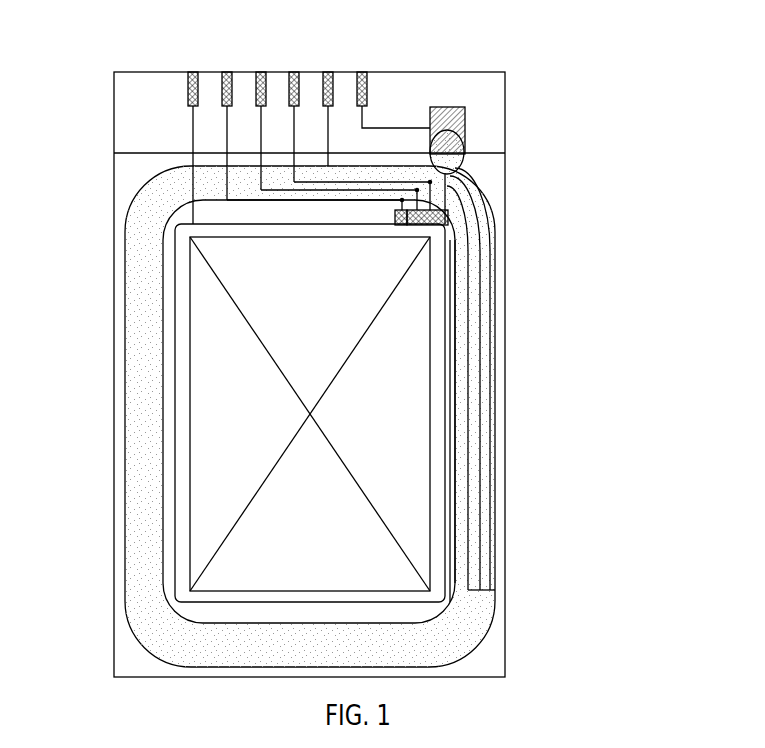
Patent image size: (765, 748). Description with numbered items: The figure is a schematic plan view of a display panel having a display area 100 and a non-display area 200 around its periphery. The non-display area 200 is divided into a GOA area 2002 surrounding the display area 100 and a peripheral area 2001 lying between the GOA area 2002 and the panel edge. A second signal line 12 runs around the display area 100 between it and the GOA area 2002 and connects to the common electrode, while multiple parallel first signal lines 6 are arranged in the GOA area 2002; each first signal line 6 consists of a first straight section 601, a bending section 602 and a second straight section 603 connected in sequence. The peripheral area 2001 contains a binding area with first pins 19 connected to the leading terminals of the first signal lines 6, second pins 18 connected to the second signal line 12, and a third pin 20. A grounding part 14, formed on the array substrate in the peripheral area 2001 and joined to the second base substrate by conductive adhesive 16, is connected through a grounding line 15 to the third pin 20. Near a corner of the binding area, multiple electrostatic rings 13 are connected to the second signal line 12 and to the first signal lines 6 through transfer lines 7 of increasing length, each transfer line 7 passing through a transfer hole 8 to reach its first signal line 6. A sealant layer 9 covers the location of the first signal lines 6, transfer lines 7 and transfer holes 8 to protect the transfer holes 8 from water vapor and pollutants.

The display area 100 is at (403, 458).
The non-display area 200 is at (398, 374).
The peripheral area 2001 is at (493, 645).
The GOA area 2002 is at (498, 543).
The sealant layer 9 is at (142, 488).
The second signal line 12 is at (175, 343).
The second pins 18 is at (193, 72).
The first pins 19 is at (228, 72).
The third pin 20 is at (362, 72).
The grounding line 15 is at (395, 128).
The grounding part 14 is at (445, 107).
The conductive adhesive 16 is at (462, 128).
The first signal lines 6 is at (527, 359).
The first straight section 601 is at (465, 162).
The bending section 602 is at (478, 180).
The second straight section 603 is at (514, 379).
The transfer lines 7 is at (482, 238).
The transfer holes 8 is at (470, 252).
The electrostatic rings 13 is at (457, 270).